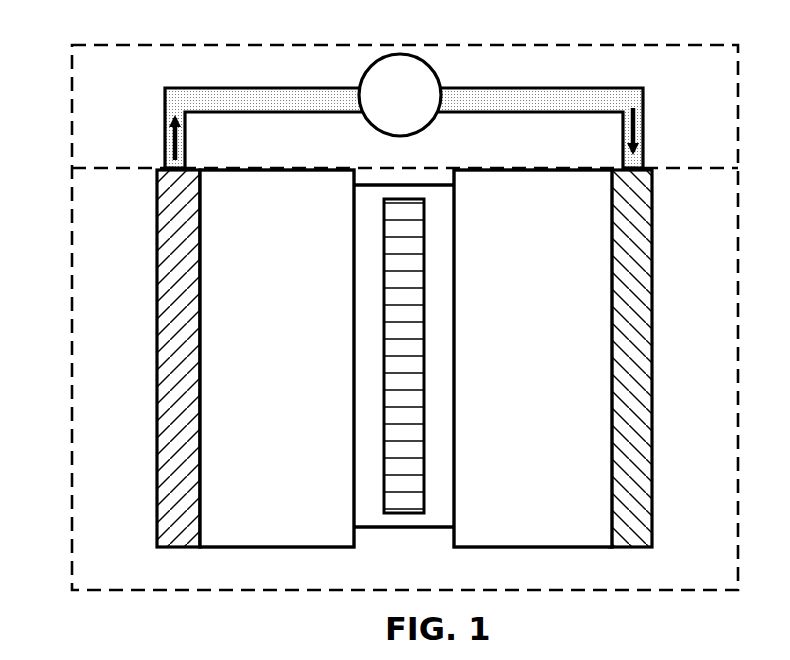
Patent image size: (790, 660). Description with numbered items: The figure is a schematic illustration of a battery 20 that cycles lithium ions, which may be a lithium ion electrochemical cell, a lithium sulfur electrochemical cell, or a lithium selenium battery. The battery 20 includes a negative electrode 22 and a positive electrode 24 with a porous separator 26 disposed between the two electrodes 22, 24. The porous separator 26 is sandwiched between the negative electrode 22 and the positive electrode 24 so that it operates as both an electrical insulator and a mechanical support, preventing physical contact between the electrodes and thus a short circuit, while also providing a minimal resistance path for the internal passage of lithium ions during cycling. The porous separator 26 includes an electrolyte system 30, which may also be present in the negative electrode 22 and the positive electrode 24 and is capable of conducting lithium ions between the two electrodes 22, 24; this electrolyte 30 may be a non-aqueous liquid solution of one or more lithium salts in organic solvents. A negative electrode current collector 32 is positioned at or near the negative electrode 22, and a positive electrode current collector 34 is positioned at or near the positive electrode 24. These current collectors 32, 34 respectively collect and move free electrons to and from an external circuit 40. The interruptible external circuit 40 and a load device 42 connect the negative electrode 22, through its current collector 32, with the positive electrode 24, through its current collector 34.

The battery 20 is at (52, 266).
The negative electrode 22 is at (277, 358).
The positive electrode 24 is at (533, 358).
The porous separator 26 is at (412, 529).
The electrolyte system 30 is at (407, 348).
The negative electrode current collector 32 is at (156, 257).
The positive electrode current collector 34 is at (653, 247).
The external circuit 40 is at (128, 42).
The load device 42 is at (404, 111).